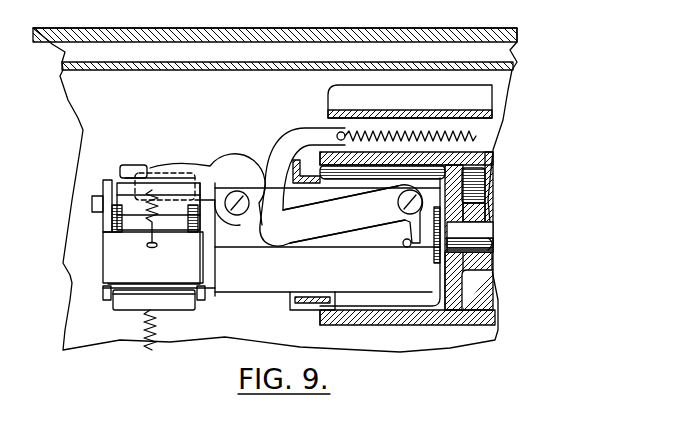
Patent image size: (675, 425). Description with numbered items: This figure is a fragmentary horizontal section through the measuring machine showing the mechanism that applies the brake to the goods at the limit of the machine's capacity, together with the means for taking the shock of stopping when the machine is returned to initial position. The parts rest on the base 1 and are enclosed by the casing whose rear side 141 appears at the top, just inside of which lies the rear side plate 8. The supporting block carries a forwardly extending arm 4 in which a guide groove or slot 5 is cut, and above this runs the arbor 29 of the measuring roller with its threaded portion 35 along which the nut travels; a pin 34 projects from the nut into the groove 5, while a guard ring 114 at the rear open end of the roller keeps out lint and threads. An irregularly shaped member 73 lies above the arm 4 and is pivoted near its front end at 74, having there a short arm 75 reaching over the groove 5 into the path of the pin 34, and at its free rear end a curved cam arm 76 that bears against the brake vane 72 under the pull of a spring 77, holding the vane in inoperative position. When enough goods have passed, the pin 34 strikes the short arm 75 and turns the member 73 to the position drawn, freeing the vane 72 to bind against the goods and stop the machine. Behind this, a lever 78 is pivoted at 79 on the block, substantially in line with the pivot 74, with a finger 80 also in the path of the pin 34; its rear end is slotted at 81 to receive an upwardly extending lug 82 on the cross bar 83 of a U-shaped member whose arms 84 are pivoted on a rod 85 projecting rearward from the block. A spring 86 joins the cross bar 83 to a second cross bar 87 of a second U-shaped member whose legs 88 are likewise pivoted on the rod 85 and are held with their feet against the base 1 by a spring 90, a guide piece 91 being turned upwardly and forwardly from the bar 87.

The base 1 is at (80, 150).
The rear side of casing 141 is at (297, 28).
The rear side plate 8 is at (300, 70).
The brake plate or vane 72 is at (487, 107).
The spring 77 is at (476, 136).
The forwardly extending arm 4 is at (397, 280).
The pivot 74 is at (470, 192).
The arbor 29 is at (478, 232).
The threaded portion of arbor 35 is at (493, 244).
The guide groove or slot 5 is at (385, 236).
The guard ring 114 is at (295, 304).
The cam arm 76 is at (278, 156).
The irregularly shaped member 73 is at (352, 214).
The short arm 75 is at (418, 246).
The pin 34 is at (404, 247).
The lever 78 is at (205, 166).
The pivot 79 is at (248, 208).
The rod 85 is at (95, 205).
The lug 82 is at (133, 165).
The cross bar 83 is at (200, 165).
The slot 81 is at (172, 172).
The arms 84 is at (122, 230).
The spring 86 is at (160, 226).
The finger 80 is at (238, 249).
The guide piece 91 is at (178, 302).
The second cross bar 87 is at (148, 292).
The legs 88 is at (206, 188).
The spring 90 is at (147, 352).